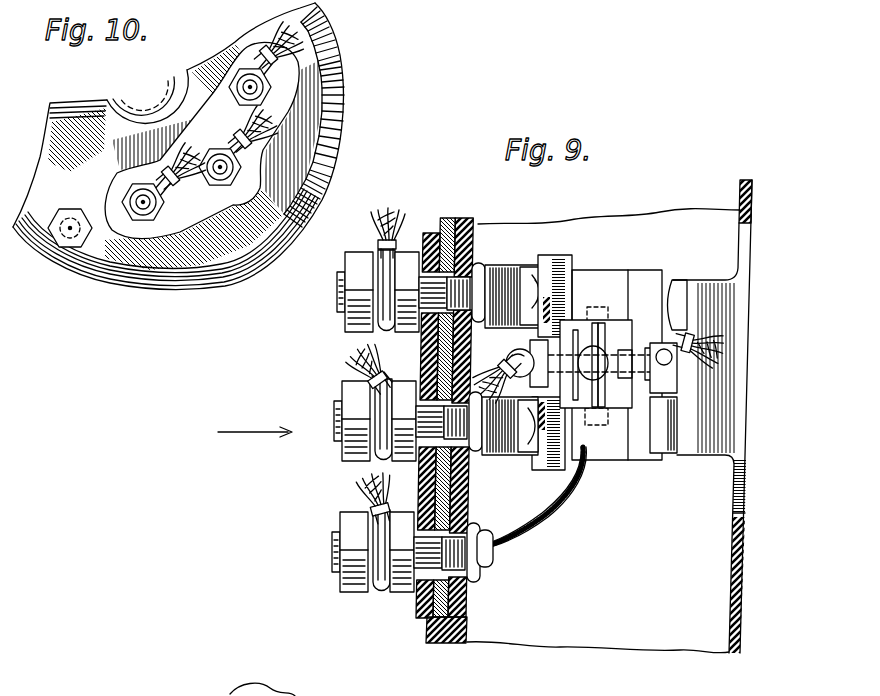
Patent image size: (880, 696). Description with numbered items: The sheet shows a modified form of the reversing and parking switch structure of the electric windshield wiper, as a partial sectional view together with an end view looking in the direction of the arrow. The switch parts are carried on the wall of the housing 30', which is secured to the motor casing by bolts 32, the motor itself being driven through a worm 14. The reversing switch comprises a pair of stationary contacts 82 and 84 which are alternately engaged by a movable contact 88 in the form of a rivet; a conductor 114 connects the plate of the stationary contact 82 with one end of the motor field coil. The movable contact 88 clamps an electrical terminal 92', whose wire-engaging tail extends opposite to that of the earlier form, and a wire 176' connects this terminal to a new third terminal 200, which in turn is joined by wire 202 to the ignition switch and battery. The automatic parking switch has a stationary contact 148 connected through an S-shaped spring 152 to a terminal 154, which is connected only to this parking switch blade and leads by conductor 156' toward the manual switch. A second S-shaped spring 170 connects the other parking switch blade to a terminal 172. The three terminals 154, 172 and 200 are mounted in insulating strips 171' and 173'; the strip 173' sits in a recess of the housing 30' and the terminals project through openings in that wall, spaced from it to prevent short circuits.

In FIG. 10, the worm 14 is at (188, 72).
In FIG. 10, the housing 30' is at (198, 146).
In FIG. 9, the housing 30' is at (452, 451).
In FIG. 10, the bolts 32 is at (70, 248).
In FIG. 9, the stationary contact 82 is at (574, 403).
In FIG. 9, the stationary contact 84 is at (677, 337).
In FIG. 9, the movable contact 88 is at (622, 357).
In FIG. 9, the electrical terminal 92' is at (540, 391).
In FIG. 9, the conductor 114 is at (497, 366).
In FIG. 9, the stationary contact 148 is at (553, 300).
In FIG. 9, the S-shaped spring 152 is at (500, 278).
In FIG. 10, the terminal 154 is at (150, 215).
In FIG. 9, the terminal 154 is at (353, 307).
In FIG. 9, the conductor 156' is at (636, 445).
In FIG. 9, the S-shaped spring 170 is at (503, 455).
In FIG. 10, the insulating strip 171' is at (252, 140).
In FIG. 9, the insulating strip 171' is at (396, 431).
In FIG. 10, the terminal 172 is at (232, 182).
In FIG. 9, the terminal 172 is at (353, 403).
In FIG. 9, the insulating strip 173' is at (500, 417).
In FIG. 9, the wire 176' is at (557, 545).
In FIG. 10, the terminal 200 is at (266, 84).
In FIG. 9, the terminal 200 is at (353, 513).
In FIG. 10, the wire 202 is at (278, 50).
In FIG. 9, the wire 202 is at (352, 373).